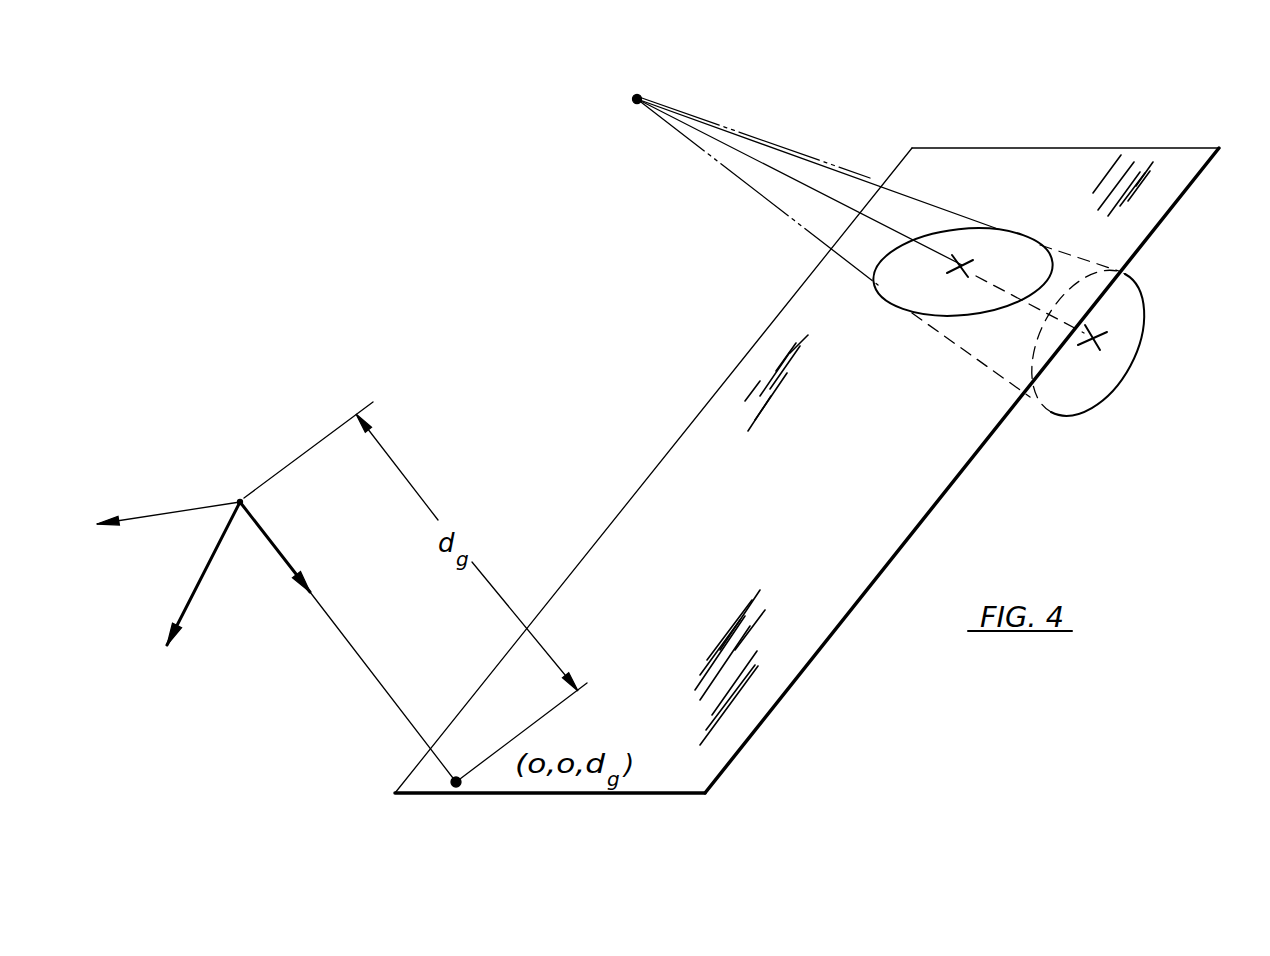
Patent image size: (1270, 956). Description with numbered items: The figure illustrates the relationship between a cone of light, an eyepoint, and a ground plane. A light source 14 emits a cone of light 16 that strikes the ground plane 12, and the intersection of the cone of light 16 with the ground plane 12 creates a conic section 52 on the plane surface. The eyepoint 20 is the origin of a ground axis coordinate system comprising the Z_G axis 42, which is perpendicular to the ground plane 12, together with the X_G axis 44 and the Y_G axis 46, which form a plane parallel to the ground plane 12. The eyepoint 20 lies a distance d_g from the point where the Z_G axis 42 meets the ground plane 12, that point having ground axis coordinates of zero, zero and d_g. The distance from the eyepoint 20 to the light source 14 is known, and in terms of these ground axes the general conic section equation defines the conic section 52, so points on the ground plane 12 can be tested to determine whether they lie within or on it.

The ground plane 12 is at (685, 434).
The light source 14 is at (636, 99).
The cone of light 16 is at (757, 184).
The eyepoint 20 is at (240, 502).
The Z_G axis 42 is at (268, 537).
The X_G axis 44 is at (203, 580).
The Y_G axis 46 is at (170, 516).
The conic section 52 is at (931, 327).